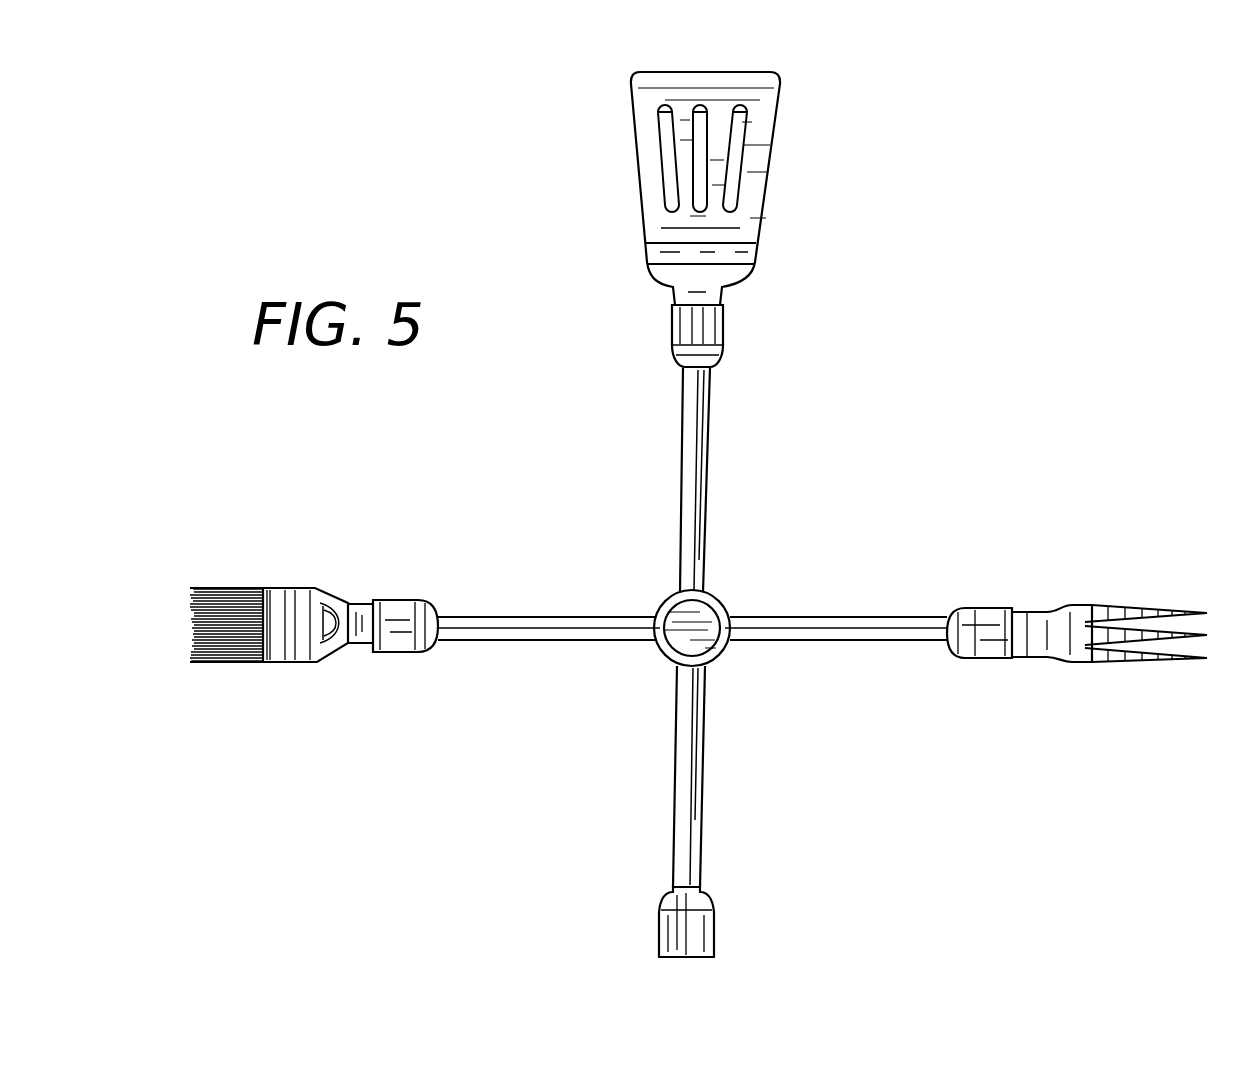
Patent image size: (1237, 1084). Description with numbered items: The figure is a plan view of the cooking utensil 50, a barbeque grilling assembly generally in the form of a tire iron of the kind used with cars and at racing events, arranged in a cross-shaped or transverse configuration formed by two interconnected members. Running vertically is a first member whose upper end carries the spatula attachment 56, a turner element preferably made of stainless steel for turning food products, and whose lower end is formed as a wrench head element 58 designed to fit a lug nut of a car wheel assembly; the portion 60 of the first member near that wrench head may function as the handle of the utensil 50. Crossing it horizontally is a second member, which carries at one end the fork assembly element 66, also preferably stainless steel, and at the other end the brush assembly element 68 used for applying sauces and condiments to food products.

The cooking utensil 50 is at (776, 694).
The spatula attachment 56 is at (751, 158).
The wrench head element 58 is at (677, 920).
The portion of the first member proximate the second end 60 is at (686, 751).
The fork assembly element 66 is at (1102, 611).
The brush assembly element 68 is at (304, 590).